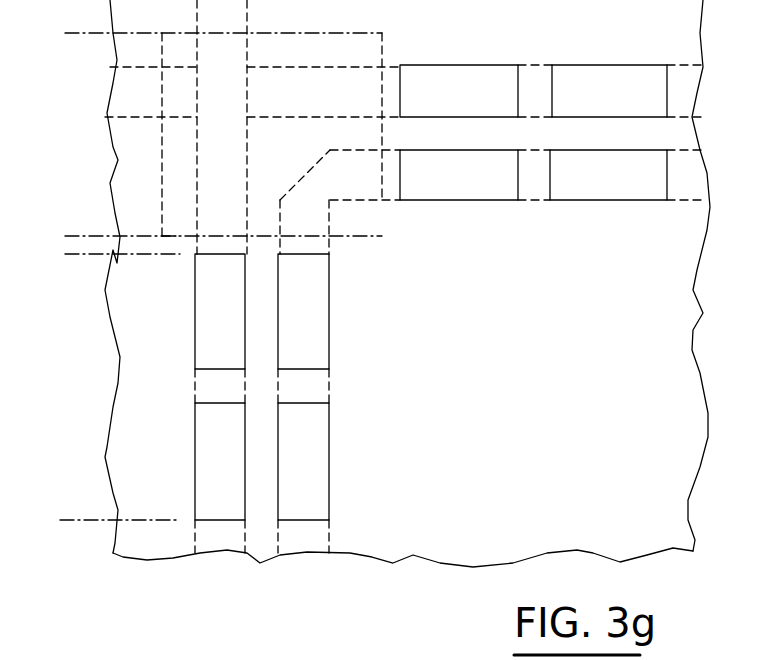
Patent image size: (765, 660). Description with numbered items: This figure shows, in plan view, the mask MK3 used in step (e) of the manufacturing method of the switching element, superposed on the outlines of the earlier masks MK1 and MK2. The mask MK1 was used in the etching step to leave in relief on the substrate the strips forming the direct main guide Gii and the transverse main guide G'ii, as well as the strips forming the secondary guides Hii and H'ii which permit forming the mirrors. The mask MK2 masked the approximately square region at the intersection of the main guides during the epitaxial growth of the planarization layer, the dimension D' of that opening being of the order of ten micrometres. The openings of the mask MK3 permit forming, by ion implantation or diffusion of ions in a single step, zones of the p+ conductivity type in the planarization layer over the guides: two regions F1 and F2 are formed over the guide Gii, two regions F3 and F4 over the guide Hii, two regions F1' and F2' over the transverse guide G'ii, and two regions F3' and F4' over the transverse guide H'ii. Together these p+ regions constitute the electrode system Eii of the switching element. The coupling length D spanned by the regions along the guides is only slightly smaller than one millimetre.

The mask MK1 is at (334, 536).
The mask MK2 is at (388, 46).
The mask MK3 is at (507, 58).
The region F1 is at (195, 461).
The region F2 is at (195, 311).
The region F3 is at (328, 461).
The region F4 is at (327, 311).
The region F1' is at (459, 73).
The region F2' is at (609, 73).
The region F3' is at (459, 208).
The region F4' is at (608, 208).
The direct main guide Gii is at (222, 542).
The secondary guide Hii is at (302, 543).
The transverse main guide G'ii is at (720, 98).
The transverse secondary guide H'ii is at (721, 183).
The electrode system Eii is at (400, 288).
The coupling length D is at (65, 387).
The dimension of the opening D' is at (67, 136).